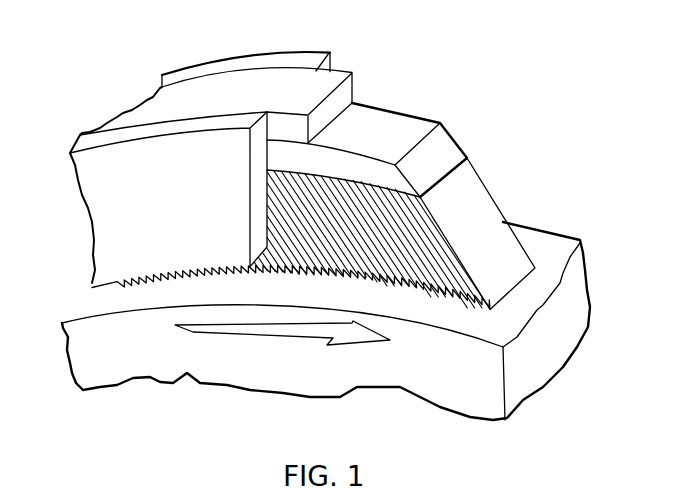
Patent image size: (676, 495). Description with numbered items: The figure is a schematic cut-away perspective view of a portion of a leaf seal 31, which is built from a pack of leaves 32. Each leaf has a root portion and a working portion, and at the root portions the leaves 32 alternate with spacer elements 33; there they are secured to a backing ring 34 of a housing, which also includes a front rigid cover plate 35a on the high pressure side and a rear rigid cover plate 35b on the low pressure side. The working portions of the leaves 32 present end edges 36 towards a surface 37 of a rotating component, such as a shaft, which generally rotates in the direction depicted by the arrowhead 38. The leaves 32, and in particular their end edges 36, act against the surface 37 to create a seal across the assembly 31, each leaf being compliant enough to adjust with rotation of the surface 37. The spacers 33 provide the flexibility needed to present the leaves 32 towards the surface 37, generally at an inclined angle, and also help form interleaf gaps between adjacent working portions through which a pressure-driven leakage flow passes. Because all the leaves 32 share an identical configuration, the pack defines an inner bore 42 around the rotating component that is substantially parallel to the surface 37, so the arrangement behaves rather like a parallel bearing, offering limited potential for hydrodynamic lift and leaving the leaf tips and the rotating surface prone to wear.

The leaf seal 31 is at (388, 73).
The leaves 32 is at (473, 210).
The spacer elements 33 is at (433, 120).
The backing ring 34 is at (160, 102).
The front rigid cover plate 35a is at (117, 203).
The rear rigid cover plate 35b is at (240, 62).
The end edges 36 is at (527, 283).
The surface 37 is at (452, 323).
The arrowhead 38 is at (233, 327).
The inner bore 42 is at (133, 297).